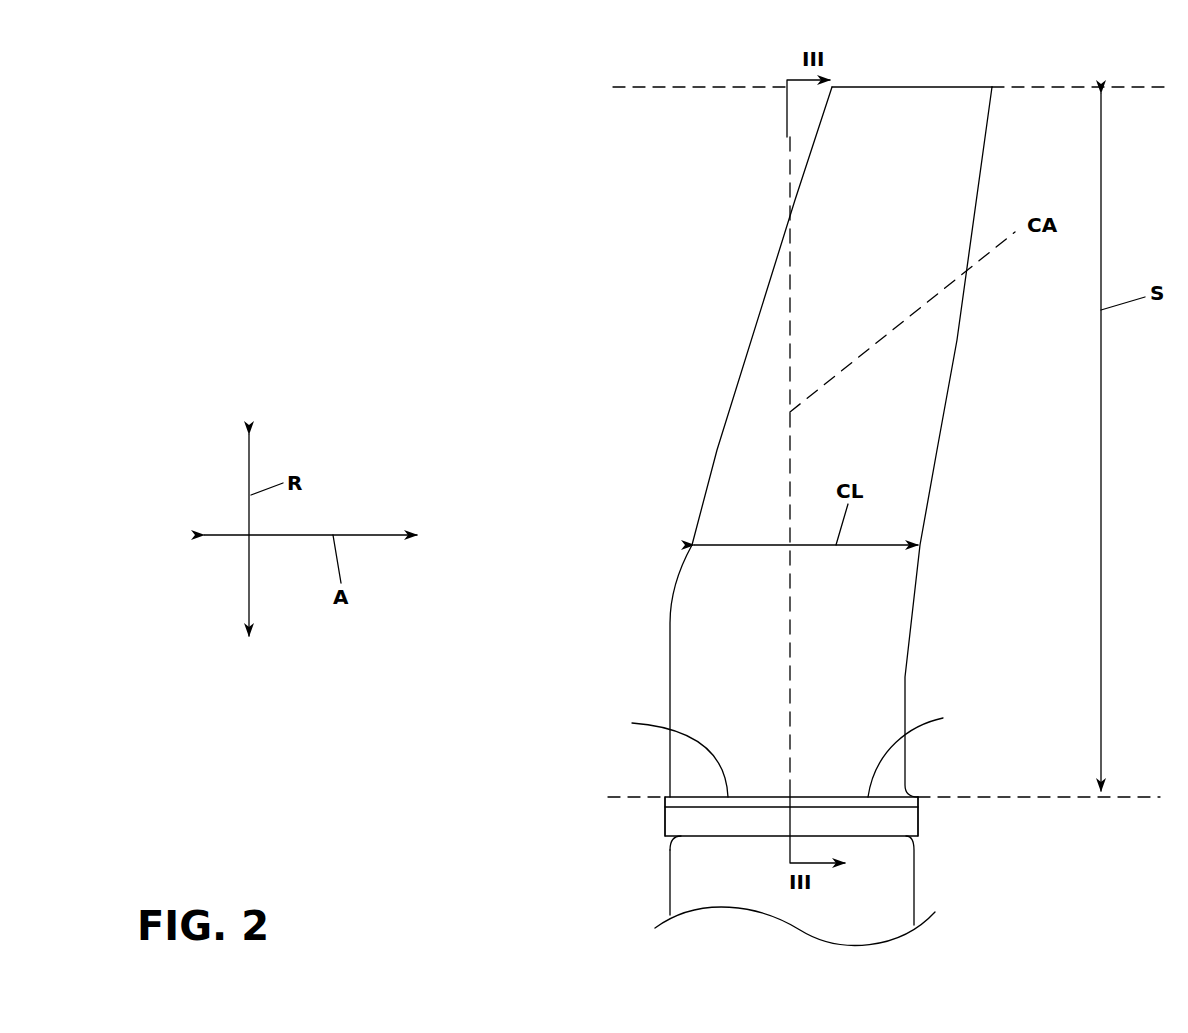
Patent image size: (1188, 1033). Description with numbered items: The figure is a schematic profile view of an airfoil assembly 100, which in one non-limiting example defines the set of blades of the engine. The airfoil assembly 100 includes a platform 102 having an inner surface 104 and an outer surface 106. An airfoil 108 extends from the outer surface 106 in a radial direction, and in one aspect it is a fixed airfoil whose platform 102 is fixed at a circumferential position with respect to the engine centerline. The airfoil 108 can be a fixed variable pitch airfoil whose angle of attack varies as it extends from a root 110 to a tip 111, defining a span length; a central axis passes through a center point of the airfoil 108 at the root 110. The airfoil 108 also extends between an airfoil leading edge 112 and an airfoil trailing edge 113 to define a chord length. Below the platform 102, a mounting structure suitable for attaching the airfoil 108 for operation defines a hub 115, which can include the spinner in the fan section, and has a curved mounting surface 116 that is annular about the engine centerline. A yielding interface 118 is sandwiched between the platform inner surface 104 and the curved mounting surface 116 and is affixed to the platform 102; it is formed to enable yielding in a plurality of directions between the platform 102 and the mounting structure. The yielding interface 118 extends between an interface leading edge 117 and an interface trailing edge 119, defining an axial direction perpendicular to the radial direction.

The airfoil assembly 100 is at (470, 103).
The platform 102 is at (929, 752).
The inner surface 104 is at (703, 810).
The outer surface 106 is at (656, 755).
The airfoil 108 is at (803, 350).
The root 110 is at (917, 798).
The tip 111 is at (925, 87).
The airfoil leading edge 112 is at (669, 655).
The airfoil trailing edge 113 is at (905, 683).
The hub 115 is at (870, 915).
The curved mounting surface 116 is at (672, 841).
The interface leading edge 117 is at (665, 822).
The yielding interface 118 is at (893, 825).
The interface trailing edge 119 is at (918, 822).